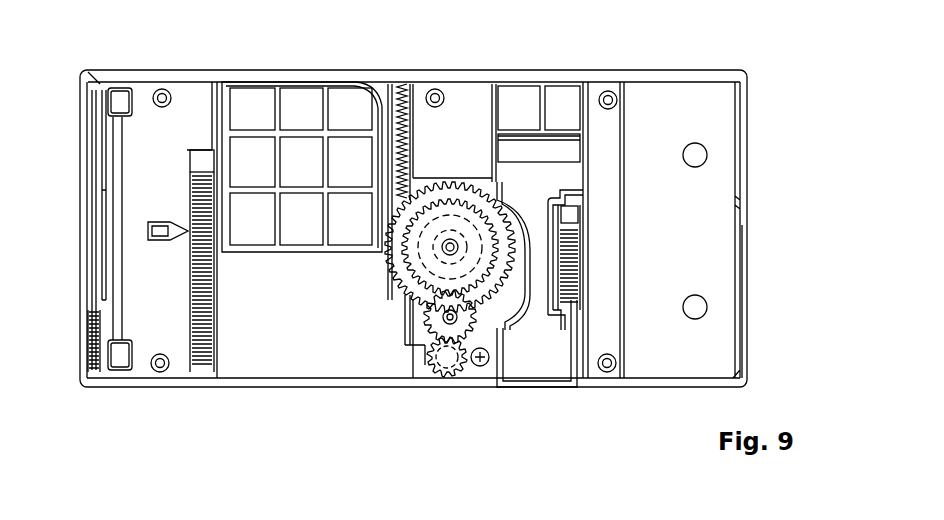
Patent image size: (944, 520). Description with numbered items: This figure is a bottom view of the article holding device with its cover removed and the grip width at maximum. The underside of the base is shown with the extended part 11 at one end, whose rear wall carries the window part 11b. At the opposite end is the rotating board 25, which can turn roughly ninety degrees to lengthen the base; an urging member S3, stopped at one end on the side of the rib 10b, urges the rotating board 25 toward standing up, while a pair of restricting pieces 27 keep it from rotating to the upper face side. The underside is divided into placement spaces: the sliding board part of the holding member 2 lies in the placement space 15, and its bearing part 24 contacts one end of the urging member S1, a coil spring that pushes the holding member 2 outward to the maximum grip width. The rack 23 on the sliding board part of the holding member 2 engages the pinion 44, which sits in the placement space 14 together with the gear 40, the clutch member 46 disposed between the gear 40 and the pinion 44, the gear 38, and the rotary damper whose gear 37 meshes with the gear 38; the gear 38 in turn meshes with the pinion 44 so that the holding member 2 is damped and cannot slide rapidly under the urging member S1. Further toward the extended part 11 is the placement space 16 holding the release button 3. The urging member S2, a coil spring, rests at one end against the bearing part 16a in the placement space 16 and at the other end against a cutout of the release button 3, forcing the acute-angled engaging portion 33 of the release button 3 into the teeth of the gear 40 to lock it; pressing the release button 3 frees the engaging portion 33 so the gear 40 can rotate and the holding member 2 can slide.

The extended part 11 is at (742, 112).
The window part 11b is at (742, 252).
The rotating board 25 is at (84, 238).
The rib 10b is at (104, 270).
The urging member S3 is at (92, 350).
The restricting piece 27 is at (122, 98).
The placement space 15 is at (248, 350).
The bearing part 24 is at (198, 160).
The urging member S1 is at (203, 355).
The holding member 2 is at (292, 78).
The rack 23 is at (412, 86).
The placement space 14 is at (420, 180).
The pinion 44 is at (457, 185).
The clutch member 46 is at (392, 264).
The engaging portion 33 is at (473, 192).
The gear 38 is at (423, 318).
The gear 37 is at (441, 372).
The gear 40 is at (412, 290).
The release button 3 is at (541, 392).
The placement space 16 is at (560, 148).
The bearing part 16a is at (580, 212).
The urging member S2 is at (583, 286).